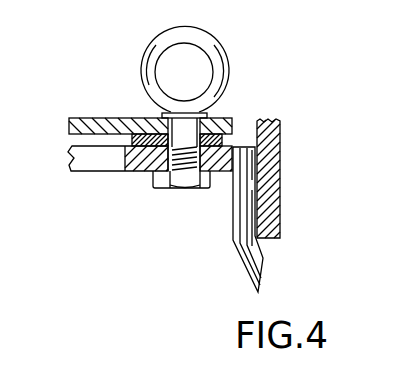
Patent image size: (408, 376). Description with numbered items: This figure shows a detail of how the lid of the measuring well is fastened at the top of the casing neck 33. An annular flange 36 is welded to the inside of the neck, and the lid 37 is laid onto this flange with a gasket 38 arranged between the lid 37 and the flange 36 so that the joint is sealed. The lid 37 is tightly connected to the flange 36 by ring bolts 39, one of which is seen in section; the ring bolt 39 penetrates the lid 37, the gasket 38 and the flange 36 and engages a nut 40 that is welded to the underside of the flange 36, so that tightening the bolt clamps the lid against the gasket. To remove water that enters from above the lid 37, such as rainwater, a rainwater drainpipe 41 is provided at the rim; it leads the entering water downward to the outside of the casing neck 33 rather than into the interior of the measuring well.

The casing neck 33 is at (270, 165).
The annular flange 36 is at (138, 172).
The lid 37 is at (223, 120).
The gasket 38 is at (135, 116).
The ring bolt 39 is at (153, 50).
The nut 40 is at (160, 177).
The rainwater drainpipe 41 is at (240, 212).